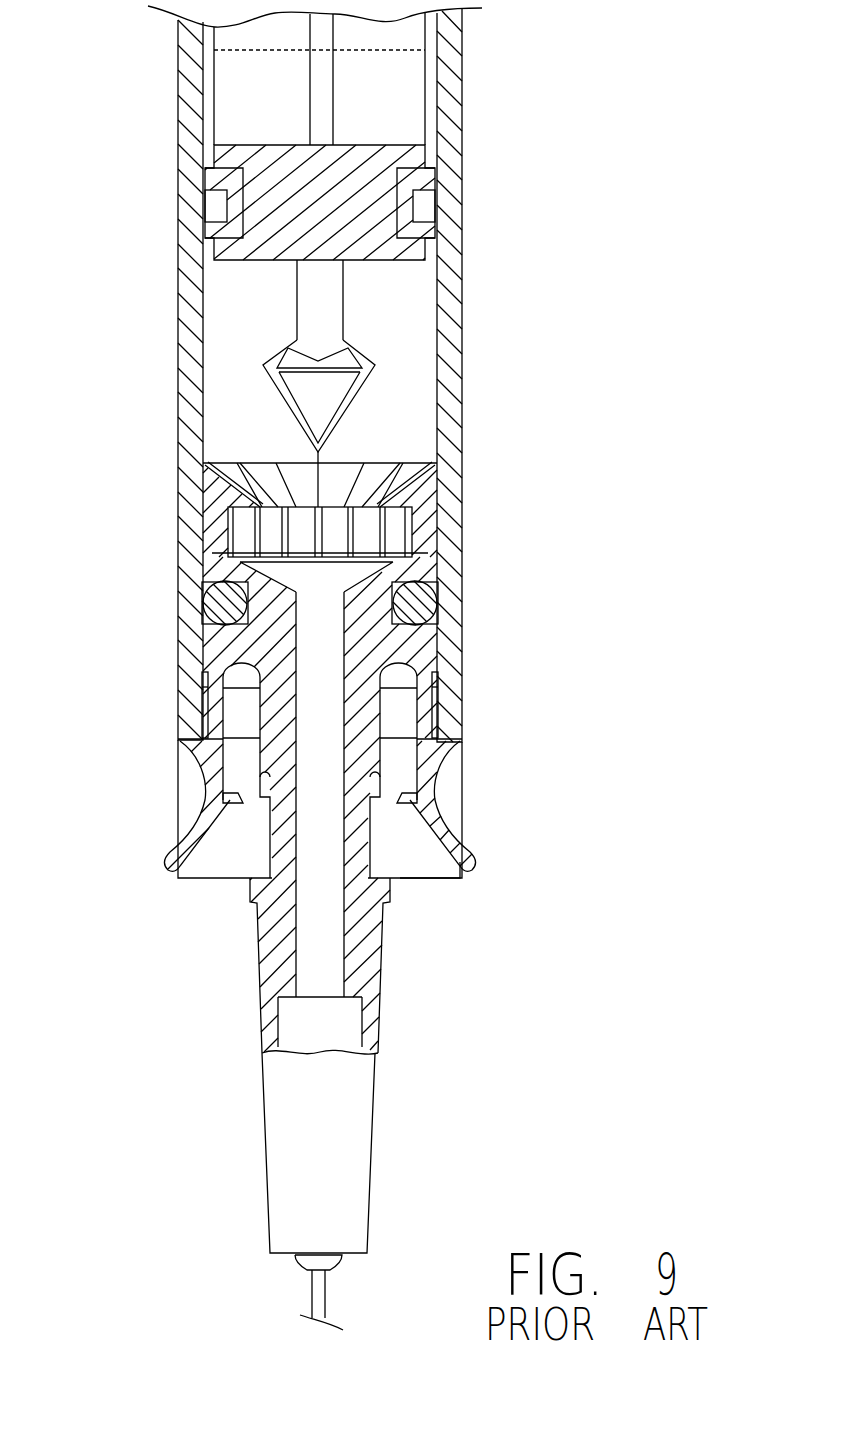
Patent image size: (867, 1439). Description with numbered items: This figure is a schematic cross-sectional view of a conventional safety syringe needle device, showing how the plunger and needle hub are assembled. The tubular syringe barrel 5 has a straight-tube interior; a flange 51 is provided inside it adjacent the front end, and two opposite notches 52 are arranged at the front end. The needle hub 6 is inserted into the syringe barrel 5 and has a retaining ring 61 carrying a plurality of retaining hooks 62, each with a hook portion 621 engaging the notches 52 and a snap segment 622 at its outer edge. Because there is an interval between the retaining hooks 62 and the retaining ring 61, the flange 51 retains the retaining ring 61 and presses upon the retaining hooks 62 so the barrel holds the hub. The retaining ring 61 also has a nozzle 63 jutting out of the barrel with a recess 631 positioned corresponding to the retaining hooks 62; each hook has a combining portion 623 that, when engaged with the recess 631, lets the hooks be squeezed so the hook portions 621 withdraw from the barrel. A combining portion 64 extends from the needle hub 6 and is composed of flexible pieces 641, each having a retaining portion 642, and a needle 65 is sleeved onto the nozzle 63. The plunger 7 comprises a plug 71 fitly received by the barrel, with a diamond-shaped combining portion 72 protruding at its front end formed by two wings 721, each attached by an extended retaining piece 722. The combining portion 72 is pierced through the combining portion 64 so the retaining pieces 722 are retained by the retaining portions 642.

The syringe barrel 5 is at (478, 545).
The flange 51 is at (398, 743).
The notch 52 is at (448, 800).
The needle hub 6 is at (381, 854).
The retaining ring 61 is at (427, 640).
The retaining hook 62 is at (218, 700).
The hook portion 621 is at (195, 744).
The snap segment 622 is at (168, 848).
The combining portion 623 is at (238, 806).
The nozzle 63 is at (350, 975).
The recess 631 is at (432, 880).
The combining portion 64 is at (243, 467).
The flexible piece 641 is at (210, 525).
The retaining portion 642 is at (292, 462).
The needle 65 is at (347, 1090).
The plunger 7 is at (408, 273).
The plug 71 is at (414, 156).
The combining portion 72 is at (411, 395).
The wing 721 is at (337, 358).
The retaining piece 722 is at (343, 420).